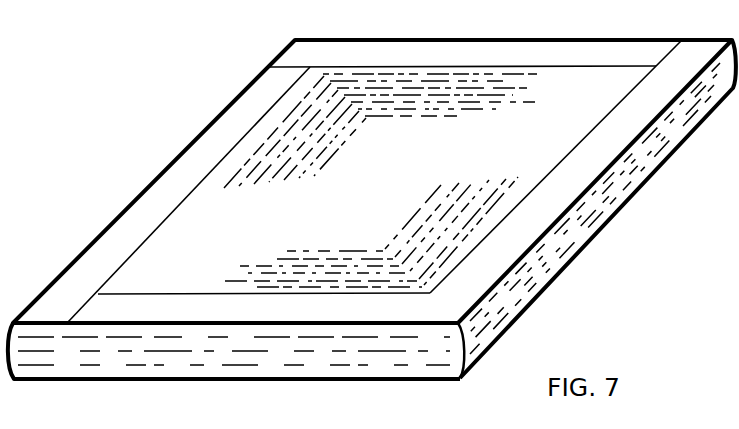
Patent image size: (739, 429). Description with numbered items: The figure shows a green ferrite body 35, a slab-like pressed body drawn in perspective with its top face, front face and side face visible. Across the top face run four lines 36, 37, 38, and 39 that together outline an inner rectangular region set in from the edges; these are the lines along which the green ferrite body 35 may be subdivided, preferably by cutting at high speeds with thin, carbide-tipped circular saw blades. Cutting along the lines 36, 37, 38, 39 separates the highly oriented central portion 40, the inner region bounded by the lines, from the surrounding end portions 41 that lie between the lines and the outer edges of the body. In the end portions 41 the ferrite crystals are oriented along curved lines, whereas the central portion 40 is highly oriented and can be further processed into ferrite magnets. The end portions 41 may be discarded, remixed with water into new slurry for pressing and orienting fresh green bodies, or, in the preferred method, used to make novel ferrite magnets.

The green ferrite body 35 is at (256, 80).
The cutting line 36 is at (475, 65).
The cutting line 37 is at (583, 138).
The cutting line 38 is at (460, 293).
The cutting line 39 is at (308, 78).
The central portion 40 is at (578, 84).
The end portions 41 is at (117, 298).